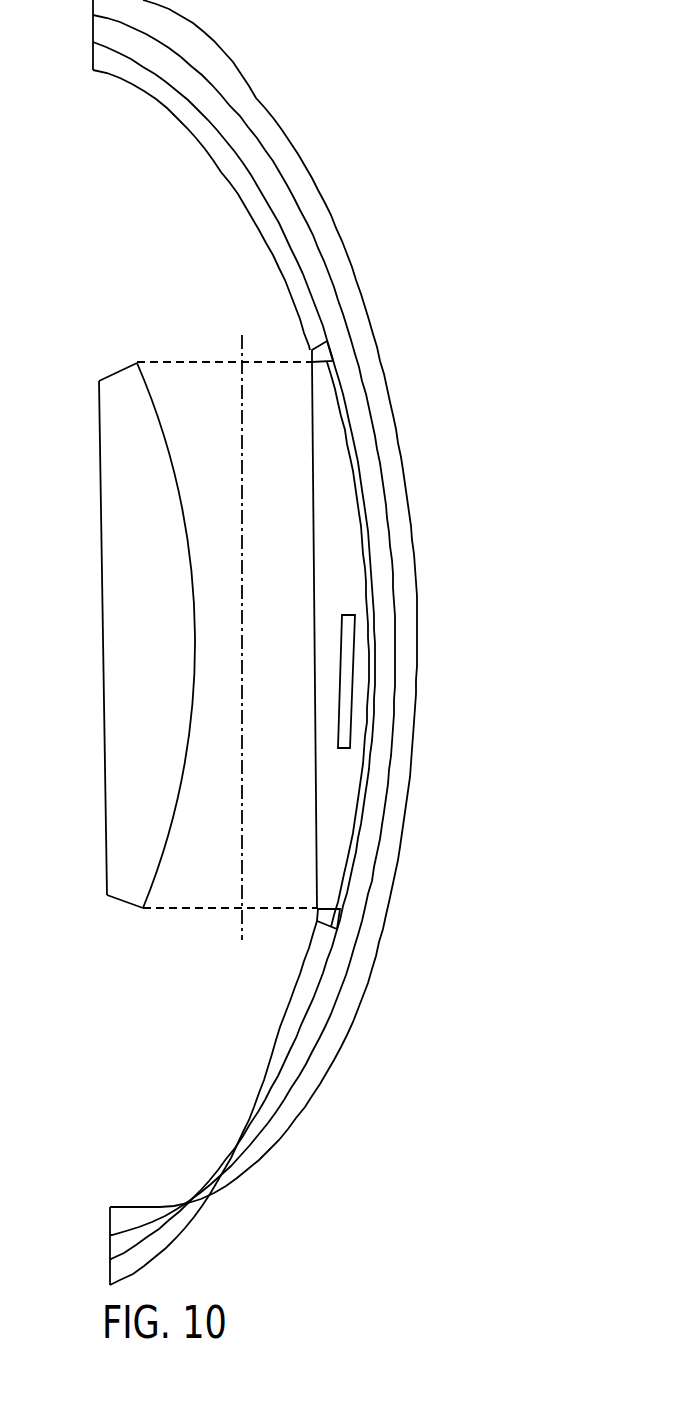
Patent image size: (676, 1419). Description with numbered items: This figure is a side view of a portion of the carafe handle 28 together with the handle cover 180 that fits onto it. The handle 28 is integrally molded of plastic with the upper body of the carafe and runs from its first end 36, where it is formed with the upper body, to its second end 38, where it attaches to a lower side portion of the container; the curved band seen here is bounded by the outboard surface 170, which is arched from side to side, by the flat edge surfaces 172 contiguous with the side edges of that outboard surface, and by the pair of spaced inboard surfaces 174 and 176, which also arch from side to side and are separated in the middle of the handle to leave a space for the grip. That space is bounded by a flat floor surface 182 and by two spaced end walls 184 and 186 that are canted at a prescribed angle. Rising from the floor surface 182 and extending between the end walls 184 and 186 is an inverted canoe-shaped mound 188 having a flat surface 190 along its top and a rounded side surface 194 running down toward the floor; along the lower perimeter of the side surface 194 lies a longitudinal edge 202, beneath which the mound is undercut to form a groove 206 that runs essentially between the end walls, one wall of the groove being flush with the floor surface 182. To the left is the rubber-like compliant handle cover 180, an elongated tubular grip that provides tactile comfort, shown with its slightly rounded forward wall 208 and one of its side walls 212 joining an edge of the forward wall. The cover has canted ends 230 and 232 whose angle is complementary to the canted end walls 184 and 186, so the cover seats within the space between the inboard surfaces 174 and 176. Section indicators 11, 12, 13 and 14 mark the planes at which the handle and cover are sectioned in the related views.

The handle 28 is at (300, 132).
The first end 36 is at (168, 32).
The second end 38 is at (198, 1227).
The outboard surface 170 is at (297, 177).
The flat edge surfaces 172 is at (318, 282).
The inboard surface 174 is at (200, 133).
The inboard surface 176 is at (277, 1040).
The handle cover 180 is at (98, 409).
The floor surface 182 is at (368, 548).
The end wall 184 is at (310, 362).
The end wall 186 is at (322, 908).
The mound 188 is at (308, 521).
The flat surface 190 is at (311, 878).
The side surface 194 is at (336, 796).
The longitudinal edge 202 is at (360, 835).
The groove 206 is at (360, 806).
The forward wall 208 is at (100, 497).
The side wall 212 is at (130, 412).
The canted end 230 is at (112, 374).
The canted end 232 is at (127, 905).
The section line 11- 11 is at (287, 687).
The section line 12- 12 is at (246, 343).
The section line 13- 13 is at (222, 682).
The section line 14- 14 is at (73, 830).